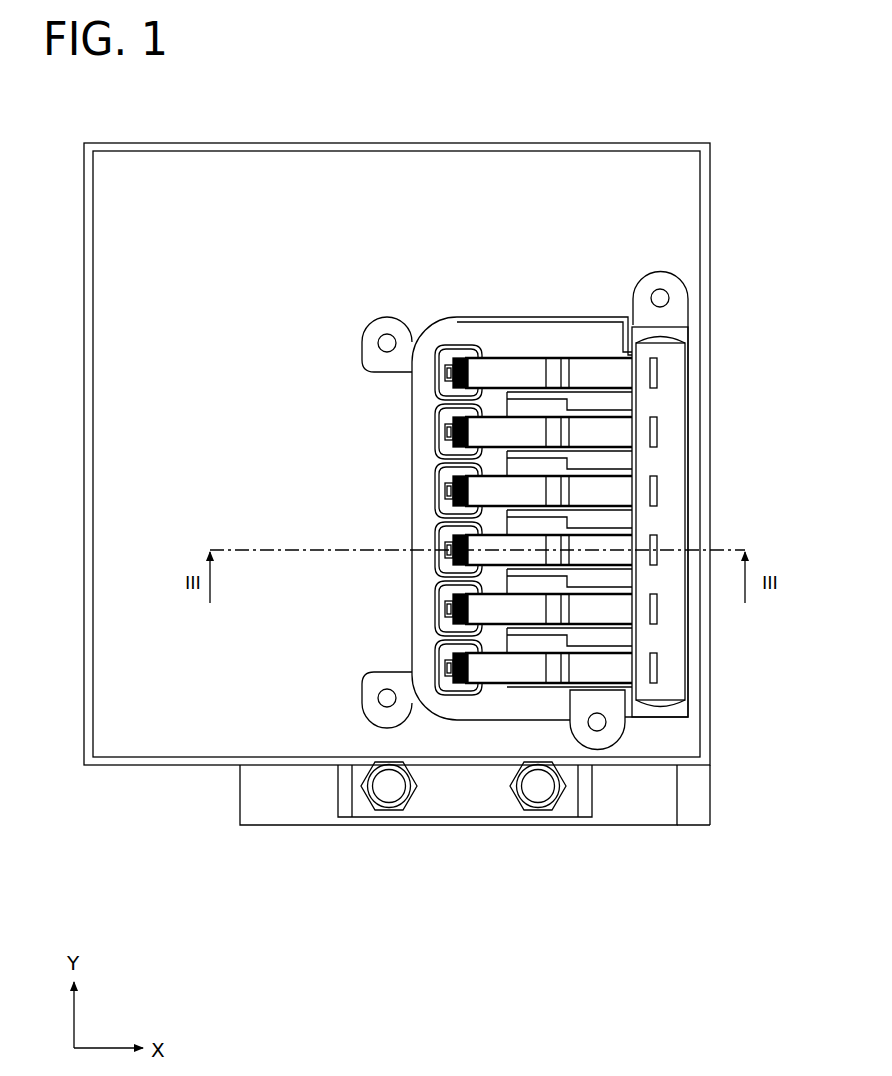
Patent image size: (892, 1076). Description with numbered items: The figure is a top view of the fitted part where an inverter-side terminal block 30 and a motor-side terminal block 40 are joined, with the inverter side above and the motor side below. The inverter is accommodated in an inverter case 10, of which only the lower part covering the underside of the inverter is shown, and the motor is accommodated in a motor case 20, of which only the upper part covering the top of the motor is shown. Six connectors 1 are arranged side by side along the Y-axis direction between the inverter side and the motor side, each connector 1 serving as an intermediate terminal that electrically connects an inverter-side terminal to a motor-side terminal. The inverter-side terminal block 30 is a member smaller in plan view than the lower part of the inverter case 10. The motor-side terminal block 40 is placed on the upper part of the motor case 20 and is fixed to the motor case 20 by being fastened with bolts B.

The connector 1 is at (424, 378).
The inverter case 10 is at (628, 766).
The motor case 20 is at (290, 824).
The inverter-side terminal block 30 is at (563, 315).
The motor-side terminal block 40 is at (477, 818).
The bolt B is at (390, 808).